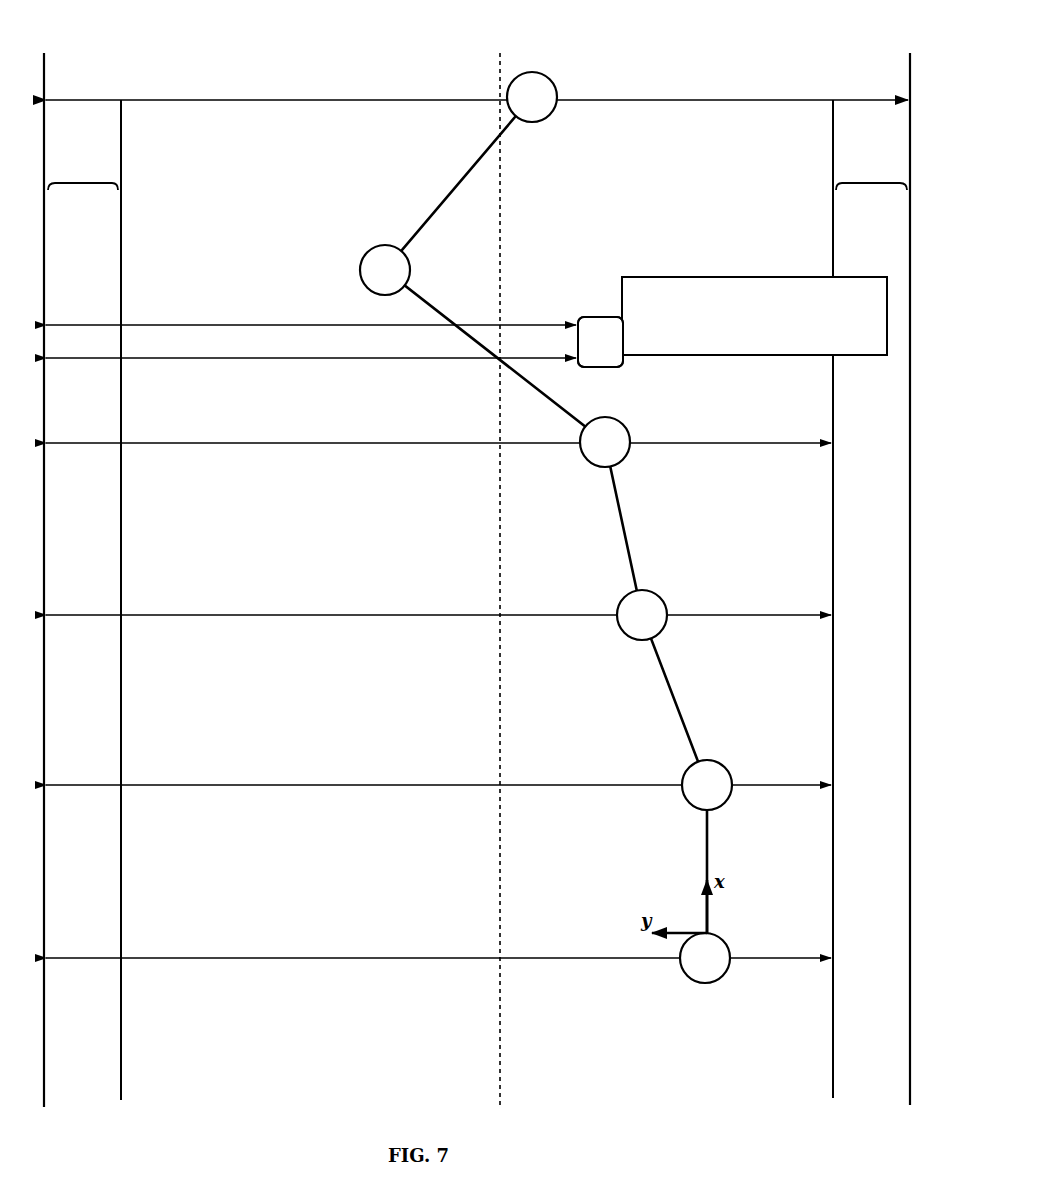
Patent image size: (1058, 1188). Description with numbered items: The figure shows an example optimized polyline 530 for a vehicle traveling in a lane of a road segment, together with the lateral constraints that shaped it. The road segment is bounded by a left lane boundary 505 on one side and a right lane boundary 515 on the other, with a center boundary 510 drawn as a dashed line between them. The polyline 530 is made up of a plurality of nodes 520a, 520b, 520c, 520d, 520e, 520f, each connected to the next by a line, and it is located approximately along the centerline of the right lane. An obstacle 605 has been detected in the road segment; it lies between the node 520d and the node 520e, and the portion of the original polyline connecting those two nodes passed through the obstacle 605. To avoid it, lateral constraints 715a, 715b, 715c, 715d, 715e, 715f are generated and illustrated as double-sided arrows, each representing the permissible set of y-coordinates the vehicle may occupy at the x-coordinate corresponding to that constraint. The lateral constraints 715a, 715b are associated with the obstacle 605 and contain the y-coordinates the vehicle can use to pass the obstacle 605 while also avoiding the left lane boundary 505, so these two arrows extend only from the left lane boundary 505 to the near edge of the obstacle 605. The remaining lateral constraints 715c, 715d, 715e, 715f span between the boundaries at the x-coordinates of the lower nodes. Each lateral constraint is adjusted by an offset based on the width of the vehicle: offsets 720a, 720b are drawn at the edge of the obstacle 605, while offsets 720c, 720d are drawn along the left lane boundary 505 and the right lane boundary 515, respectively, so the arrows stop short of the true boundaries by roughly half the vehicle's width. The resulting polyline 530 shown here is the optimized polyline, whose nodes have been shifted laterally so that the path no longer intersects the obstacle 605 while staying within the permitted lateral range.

The left lane boundary 505 is at (44, 1095).
The center boundary 510 is at (500, 1080).
The right lane boundary 515 is at (910, 1098).
The node 520a is at (728, 950).
The node 520b is at (730, 778).
The node 520c is at (665, 605).
The node 520d is at (623, 462).
The node 520e is at (361, 262).
The node 520f is at (556, 85).
The polyline 530 is at (733, 990).
The obstacle 605 is at (754, 316).
The lateral constraint 715a is at (222, 325).
The lateral constraint 715b is at (222, 358).
The lateral constraint 715c is at (222, 443).
The lateral constraint 715d is at (222, 615).
The lateral constraint 715e is at (222, 785).
The lateral constraint 715f is at (222, 958).
The offset 720a is at (604, 367).
The offset 720b is at (598, 317).
The offset 720c is at (84, 182).
The offset 720d is at (870, 183).